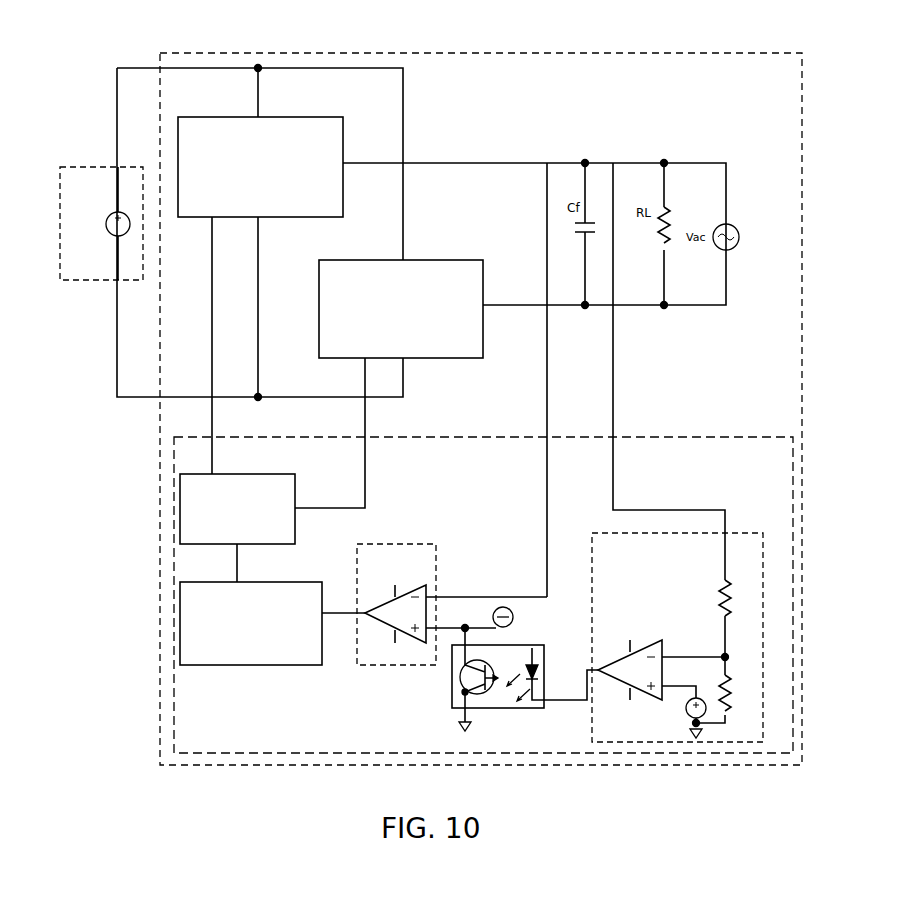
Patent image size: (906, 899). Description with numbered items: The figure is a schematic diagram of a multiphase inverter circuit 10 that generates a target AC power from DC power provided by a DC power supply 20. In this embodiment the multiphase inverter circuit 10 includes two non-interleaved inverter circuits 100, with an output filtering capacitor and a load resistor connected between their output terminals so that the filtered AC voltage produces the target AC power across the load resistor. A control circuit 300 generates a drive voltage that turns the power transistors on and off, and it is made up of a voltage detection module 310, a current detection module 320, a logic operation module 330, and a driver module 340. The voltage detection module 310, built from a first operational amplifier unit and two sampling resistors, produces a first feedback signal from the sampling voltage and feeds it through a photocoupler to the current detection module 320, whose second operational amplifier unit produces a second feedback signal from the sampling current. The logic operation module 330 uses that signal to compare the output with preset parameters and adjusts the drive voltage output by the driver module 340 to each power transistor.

The multiphase inverter circuit 10 is at (697, 53).
The DC power supply 20 is at (85, 167).
The non-interleaved inverter circuit 100 is at (335, 117).
The control circuit 300 is at (698, 437).
The voltage detection module 310 is at (738, 533).
The current detection module 320 is at (410, 544).
The logic operation module 330 is at (298, 582).
The driver module 340 is at (268, 474).